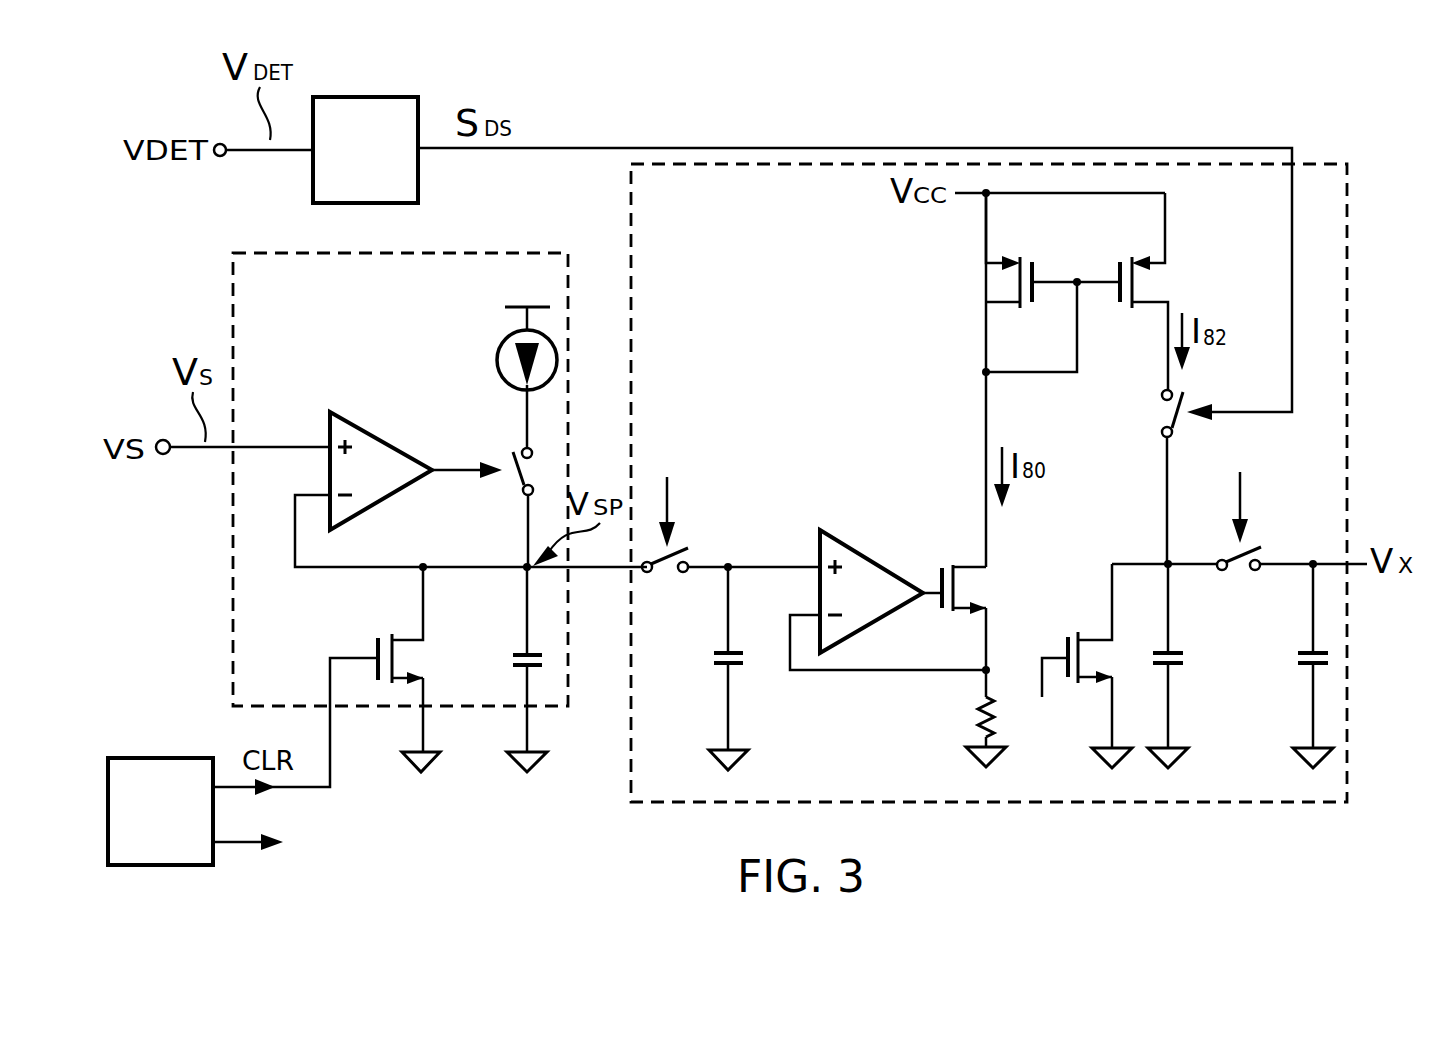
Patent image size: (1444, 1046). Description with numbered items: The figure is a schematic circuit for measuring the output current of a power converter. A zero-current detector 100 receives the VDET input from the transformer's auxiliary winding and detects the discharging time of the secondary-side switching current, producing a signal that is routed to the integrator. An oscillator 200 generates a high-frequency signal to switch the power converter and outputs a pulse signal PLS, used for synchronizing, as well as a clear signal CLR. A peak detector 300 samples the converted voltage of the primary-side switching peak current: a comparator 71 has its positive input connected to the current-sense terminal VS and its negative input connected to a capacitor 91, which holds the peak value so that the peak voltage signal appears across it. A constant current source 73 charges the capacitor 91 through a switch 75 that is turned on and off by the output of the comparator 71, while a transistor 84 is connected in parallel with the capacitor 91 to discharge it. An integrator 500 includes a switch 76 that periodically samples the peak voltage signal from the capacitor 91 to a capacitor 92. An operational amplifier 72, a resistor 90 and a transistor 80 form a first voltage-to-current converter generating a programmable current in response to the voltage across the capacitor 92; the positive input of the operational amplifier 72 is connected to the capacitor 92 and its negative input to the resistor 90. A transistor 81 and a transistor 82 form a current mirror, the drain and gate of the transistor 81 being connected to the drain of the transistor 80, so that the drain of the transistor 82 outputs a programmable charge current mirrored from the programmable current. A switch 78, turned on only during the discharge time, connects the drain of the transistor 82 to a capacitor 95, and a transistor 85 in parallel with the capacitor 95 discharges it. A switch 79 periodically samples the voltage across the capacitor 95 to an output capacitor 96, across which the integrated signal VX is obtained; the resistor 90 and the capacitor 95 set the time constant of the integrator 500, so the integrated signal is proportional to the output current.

The zero-current detector 100 is at (363, 97).
The oscillator 200 is at (150, 756).
The peak detector 300 is at (233, 607).
The integrator 500 is at (1347, 228).
The comparator 71 is at (353, 417).
The operational amplifier 72 is at (849, 546).
The constant current source 73 is at (490, 358).
The switch 75 is at (512, 497).
The switch 76 is at (683, 537).
The switch 78 is at (1155, 414).
The switch 79 is at (1263, 547).
The transistor 80 is at (947, 566).
The transistor 81 is at (990, 282).
The transistor 82 is at (1167, 282).
The transistor 84 is at (420, 657).
The transistor 85 is at (1075, 632).
The resistor 90 is at (970, 716).
The capacitor 91 is at (546, 658).
The capacitor 92 is at (750, 658).
The capacitor 95 is at (1187, 657).
The output capacitor 96 is at (1333, 657).